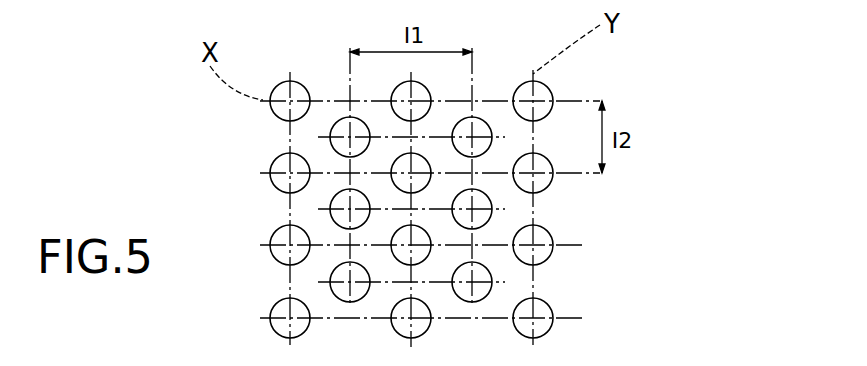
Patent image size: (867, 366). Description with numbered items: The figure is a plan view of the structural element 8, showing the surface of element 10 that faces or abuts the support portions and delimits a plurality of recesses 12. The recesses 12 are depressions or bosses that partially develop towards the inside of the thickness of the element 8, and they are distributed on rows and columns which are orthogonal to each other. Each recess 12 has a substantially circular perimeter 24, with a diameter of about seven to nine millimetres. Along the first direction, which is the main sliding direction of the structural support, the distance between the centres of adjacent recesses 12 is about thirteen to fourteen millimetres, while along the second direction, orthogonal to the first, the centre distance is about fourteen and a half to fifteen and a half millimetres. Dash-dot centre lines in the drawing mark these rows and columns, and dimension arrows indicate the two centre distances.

The element 8 is at (450, 200).
The element 10 is at (510, 272).
The recesses 12 is at (278, 258).
The circular perimeter 24 is at (266, 184).